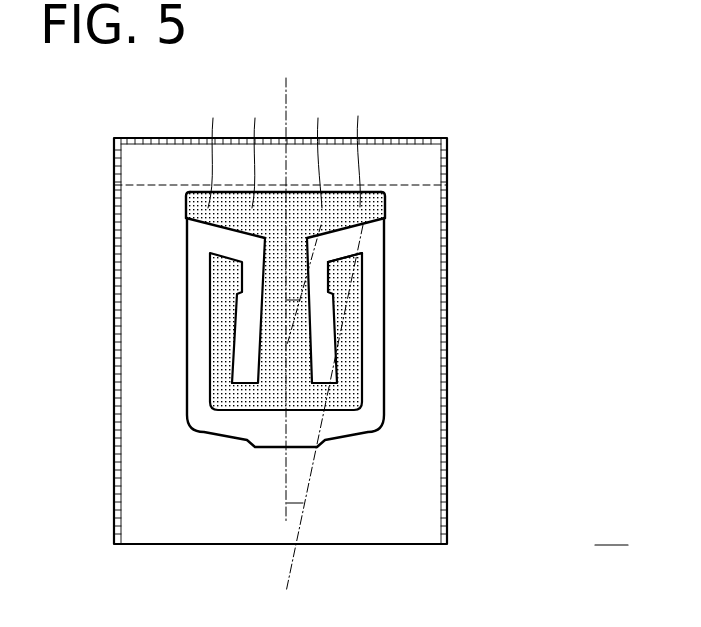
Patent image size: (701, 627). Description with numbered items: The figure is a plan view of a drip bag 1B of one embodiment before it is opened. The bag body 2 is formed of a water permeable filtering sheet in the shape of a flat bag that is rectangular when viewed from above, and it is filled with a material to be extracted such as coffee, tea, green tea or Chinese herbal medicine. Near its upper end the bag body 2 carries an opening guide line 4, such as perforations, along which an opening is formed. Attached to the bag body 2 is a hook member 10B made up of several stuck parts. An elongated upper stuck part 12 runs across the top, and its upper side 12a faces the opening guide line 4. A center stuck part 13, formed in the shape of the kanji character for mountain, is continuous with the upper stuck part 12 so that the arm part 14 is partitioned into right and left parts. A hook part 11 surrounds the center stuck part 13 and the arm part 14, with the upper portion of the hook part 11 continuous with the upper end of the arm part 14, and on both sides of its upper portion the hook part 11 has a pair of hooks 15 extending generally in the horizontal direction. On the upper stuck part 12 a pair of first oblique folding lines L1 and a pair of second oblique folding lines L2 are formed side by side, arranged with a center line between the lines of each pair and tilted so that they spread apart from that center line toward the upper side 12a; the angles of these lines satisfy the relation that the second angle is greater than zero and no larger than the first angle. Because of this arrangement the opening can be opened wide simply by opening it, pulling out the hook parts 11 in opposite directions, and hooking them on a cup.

The drip bag 1B is at (611, 534).
The bag body 2 is at (422, 479).
The opening guide line 4 is at (143, 185).
The hook member 10B is at (393, 310).
The hook part 11 is at (373, 325).
The upper stuck part 12 is at (370, 207).
The upper side of upper stuck part 12a is at (383, 192).
The center stuck part 13 is at (287, 360).
The arm part 14 is at (318, 302).
The hook 15 is at (419, 251).
The first oblique folding line L1 is at (285, 153).
The second oblique folding line L2 is at (283, 152).